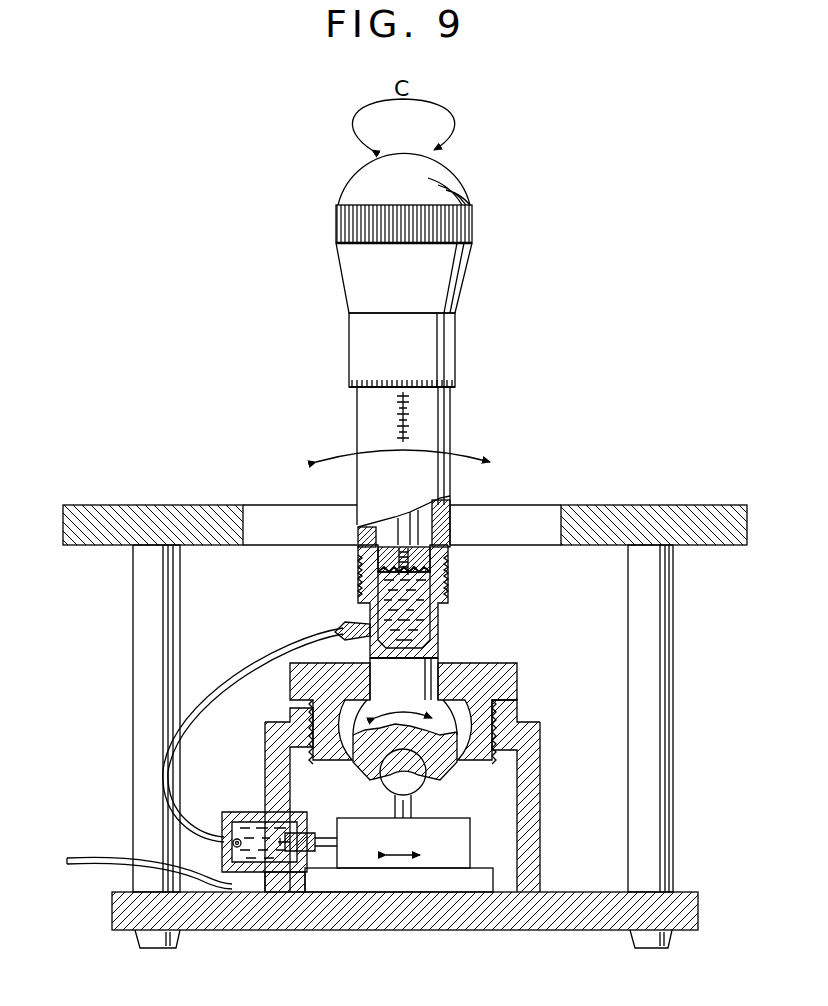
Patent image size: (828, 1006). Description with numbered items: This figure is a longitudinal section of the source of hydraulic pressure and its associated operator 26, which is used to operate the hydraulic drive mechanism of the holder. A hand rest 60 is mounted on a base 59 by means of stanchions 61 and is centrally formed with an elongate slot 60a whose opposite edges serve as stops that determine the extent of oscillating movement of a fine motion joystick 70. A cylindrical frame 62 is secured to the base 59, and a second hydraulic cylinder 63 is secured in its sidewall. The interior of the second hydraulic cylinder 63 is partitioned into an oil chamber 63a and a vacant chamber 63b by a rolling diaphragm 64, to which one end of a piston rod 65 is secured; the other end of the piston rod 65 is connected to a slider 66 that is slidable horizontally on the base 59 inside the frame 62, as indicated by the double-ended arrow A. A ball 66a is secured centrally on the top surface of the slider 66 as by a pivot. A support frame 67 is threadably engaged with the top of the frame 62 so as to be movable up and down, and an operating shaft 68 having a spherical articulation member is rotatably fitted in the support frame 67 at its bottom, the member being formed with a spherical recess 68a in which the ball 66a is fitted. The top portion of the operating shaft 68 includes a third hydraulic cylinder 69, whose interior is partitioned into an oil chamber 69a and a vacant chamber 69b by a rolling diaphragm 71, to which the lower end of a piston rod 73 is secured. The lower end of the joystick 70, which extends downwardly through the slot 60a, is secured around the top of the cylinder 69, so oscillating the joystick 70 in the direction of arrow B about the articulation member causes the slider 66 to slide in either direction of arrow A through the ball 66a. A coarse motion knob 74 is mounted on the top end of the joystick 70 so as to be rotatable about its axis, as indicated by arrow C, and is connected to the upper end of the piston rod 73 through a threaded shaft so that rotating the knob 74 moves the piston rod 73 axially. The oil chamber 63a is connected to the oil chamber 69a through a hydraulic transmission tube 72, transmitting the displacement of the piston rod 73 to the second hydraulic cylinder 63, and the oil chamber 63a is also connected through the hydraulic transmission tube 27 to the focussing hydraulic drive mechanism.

The operator 26 is at (305, 375).
The hydraulic transmission tube 27 is at (95, 857).
The base 59 is at (528, 922).
The hand rest 60 is at (405, 509).
The elongate slot 60a is at (533, 520).
The stanchions 61 is at (140, 672).
The cylindrical frame 62 is at (540, 745).
The second hydraulic cylinder 63 is at (268, 825).
The oil chamber 63a is at (243, 812).
The vacant chamber 63b is at (303, 832).
The rolling diaphragm 64 is at (290, 892).
The piston rod 65 is at (330, 892).
The slider 66 is at (466, 826).
The ball 66a is at (422, 776).
The support frame 67 is at (508, 680).
The operating shaft 68 is at (412, 692).
The spherical recess 68a is at (366, 764).
The third hydraulic cylinder 69 is at (407, 601).
The oil chamber 69a is at (448, 587).
The vacant chamber 69b is at (358, 557).
The fine motion joystick 70 is at (445, 410).
The rolling diaphragm 71 is at (372, 590).
The hydraulic transmission tube 72 is at (246, 660).
The piston rod 73 is at (402, 522).
The coarse motion knob 74 is at (430, 180).